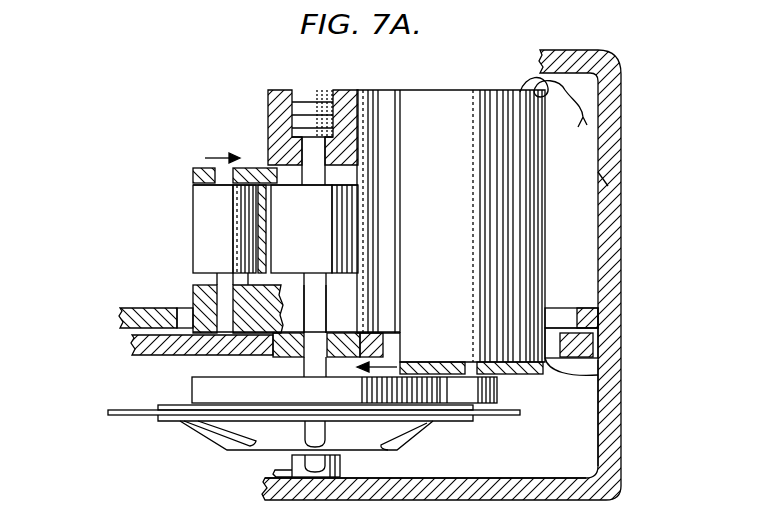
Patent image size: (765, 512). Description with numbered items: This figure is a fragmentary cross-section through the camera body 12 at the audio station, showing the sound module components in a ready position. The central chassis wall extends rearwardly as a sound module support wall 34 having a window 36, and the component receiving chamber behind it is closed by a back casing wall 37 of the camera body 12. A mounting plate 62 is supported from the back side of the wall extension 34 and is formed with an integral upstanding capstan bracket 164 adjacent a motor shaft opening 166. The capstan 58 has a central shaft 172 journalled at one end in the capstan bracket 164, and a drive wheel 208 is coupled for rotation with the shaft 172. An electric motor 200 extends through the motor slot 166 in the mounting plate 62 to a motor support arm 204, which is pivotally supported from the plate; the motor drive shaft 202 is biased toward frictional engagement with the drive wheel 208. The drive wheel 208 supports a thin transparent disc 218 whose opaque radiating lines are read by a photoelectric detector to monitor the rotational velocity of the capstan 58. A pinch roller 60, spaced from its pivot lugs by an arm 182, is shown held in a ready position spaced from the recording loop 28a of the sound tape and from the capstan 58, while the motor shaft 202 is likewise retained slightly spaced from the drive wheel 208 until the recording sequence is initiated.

The camera body 12 is at (640, 284).
The recording loop 28a is at (267, 250).
The sound module support wall 34 is at (153, 318).
The window 36 is at (557, 317).
The back casing wall 37 is at (505, 478).
The capstan 58 is at (323, 231).
The pinch roller 60 is at (210, 228).
The mounting plate 62 is at (150, 348).
The capstan bracket 164 is at (280, 103).
The motor shaft opening 166 is at (598, 379).
The central shaft 172 is at (320, 314).
The arm 182 is at (288, 352).
The electric motor 200 is at (458, 235).
The drive shaft 202 is at (496, 388).
The motor support arm 204 is at (543, 362).
The drive wheel 208 is at (341, 402).
The transparent disc 218 is at (128, 418).